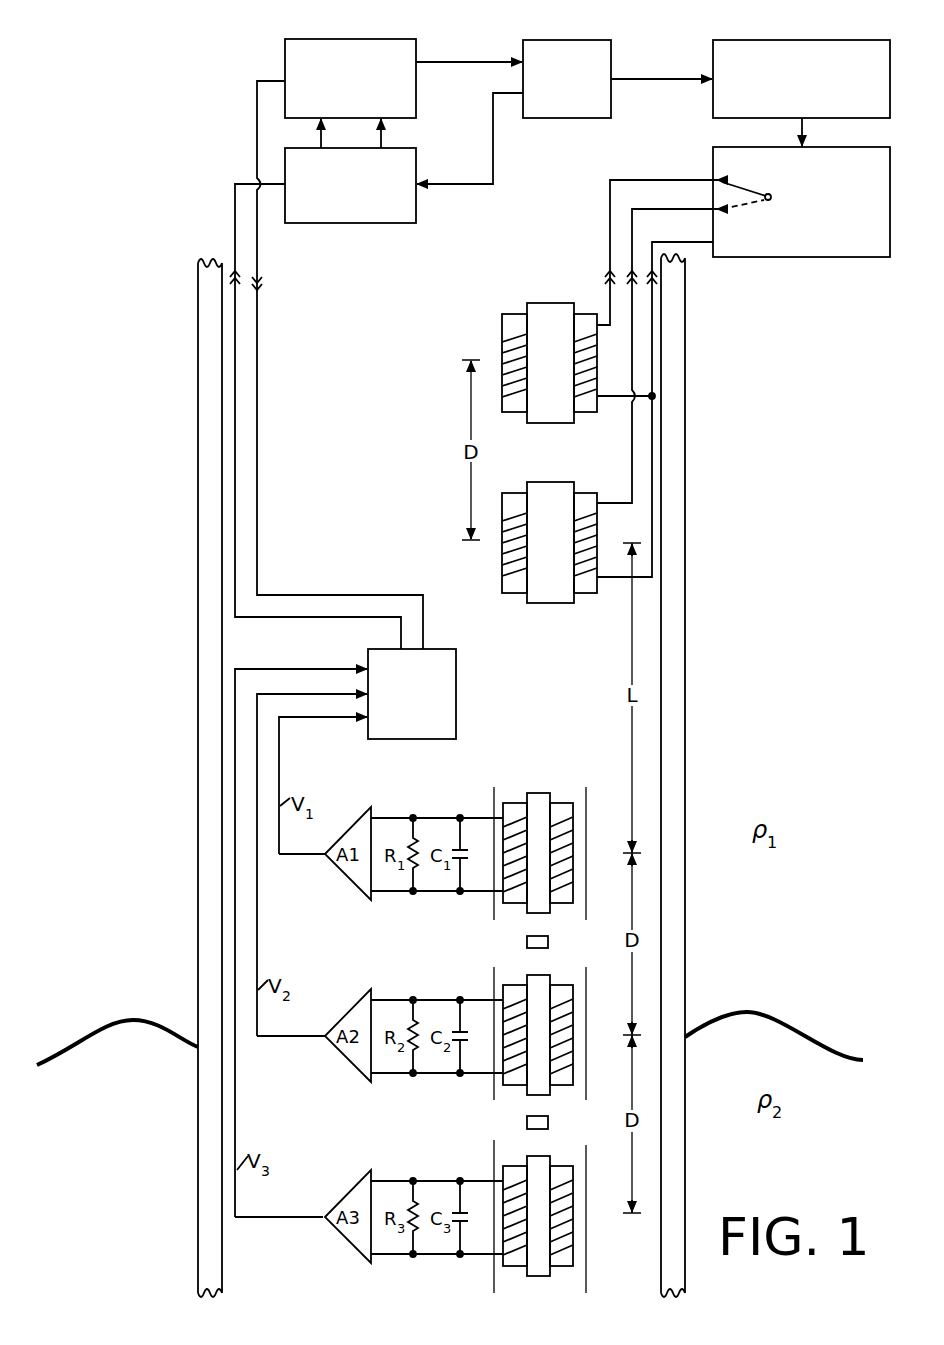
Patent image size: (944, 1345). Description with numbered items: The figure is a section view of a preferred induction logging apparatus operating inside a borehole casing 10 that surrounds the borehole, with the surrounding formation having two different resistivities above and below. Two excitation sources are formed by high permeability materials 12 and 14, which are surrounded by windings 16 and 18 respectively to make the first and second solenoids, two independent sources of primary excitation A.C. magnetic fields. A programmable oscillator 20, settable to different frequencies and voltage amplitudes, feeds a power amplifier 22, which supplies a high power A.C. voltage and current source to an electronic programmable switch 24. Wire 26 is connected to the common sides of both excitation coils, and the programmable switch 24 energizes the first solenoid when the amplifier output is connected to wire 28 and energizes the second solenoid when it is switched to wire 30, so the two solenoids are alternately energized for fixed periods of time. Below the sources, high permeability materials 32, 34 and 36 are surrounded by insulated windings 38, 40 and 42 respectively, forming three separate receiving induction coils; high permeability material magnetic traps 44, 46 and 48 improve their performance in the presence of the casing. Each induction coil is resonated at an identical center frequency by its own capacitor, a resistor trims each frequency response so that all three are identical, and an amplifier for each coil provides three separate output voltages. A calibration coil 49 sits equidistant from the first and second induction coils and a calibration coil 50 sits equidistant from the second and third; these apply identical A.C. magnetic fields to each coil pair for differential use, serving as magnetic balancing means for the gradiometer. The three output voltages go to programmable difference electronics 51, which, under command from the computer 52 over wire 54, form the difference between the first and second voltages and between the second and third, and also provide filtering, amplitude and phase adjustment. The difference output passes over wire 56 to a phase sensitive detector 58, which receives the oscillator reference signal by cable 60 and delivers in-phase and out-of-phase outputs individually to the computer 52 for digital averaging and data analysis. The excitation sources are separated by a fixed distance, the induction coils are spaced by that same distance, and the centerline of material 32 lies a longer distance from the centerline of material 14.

The borehole casing 10 is at (688, 327).
The high permeability material 12 is at (532, 348).
The high permeability material 14 is at (535, 528).
The winding 16 is at (497, 350).
The winding 18 is at (500, 530).
The programmable oscillator 20 is at (573, 37).
The power amplifier 22 is at (762, 37).
The programmable switch 24 is at (757, 147).
The wire 26 is at (690, 242).
The wire 28 is at (652, 180).
The wire 30 is at (670, 209).
The high permeability material 32 is at (533, 833).
The high permeability material 34 is at (533, 1014).
The high permeability material 36 is at (533, 1195).
The insulated winding 38 is at (517, 800).
The insulated winding 40 is at (517, 982).
The insulated winding 42 is at (517, 1163).
The high permeability material magnetic trap 44 is at (586, 830).
The high permeability material magnetic trap 46 is at (586, 1010).
The high permeability material magnetic trap 48 is at (586, 1192).
The calibration coil 49 is at (548, 942).
The calibration coil 50 is at (548, 1124).
The programmable difference electronics 51 is at (456, 688).
The computer 52 is at (337, 37).
The wire 54 is at (368, 595).
The wire 56 is at (350, 617).
The phase sensitive detector 58 is at (338, 226).
The cable 60 is at (494, 179).